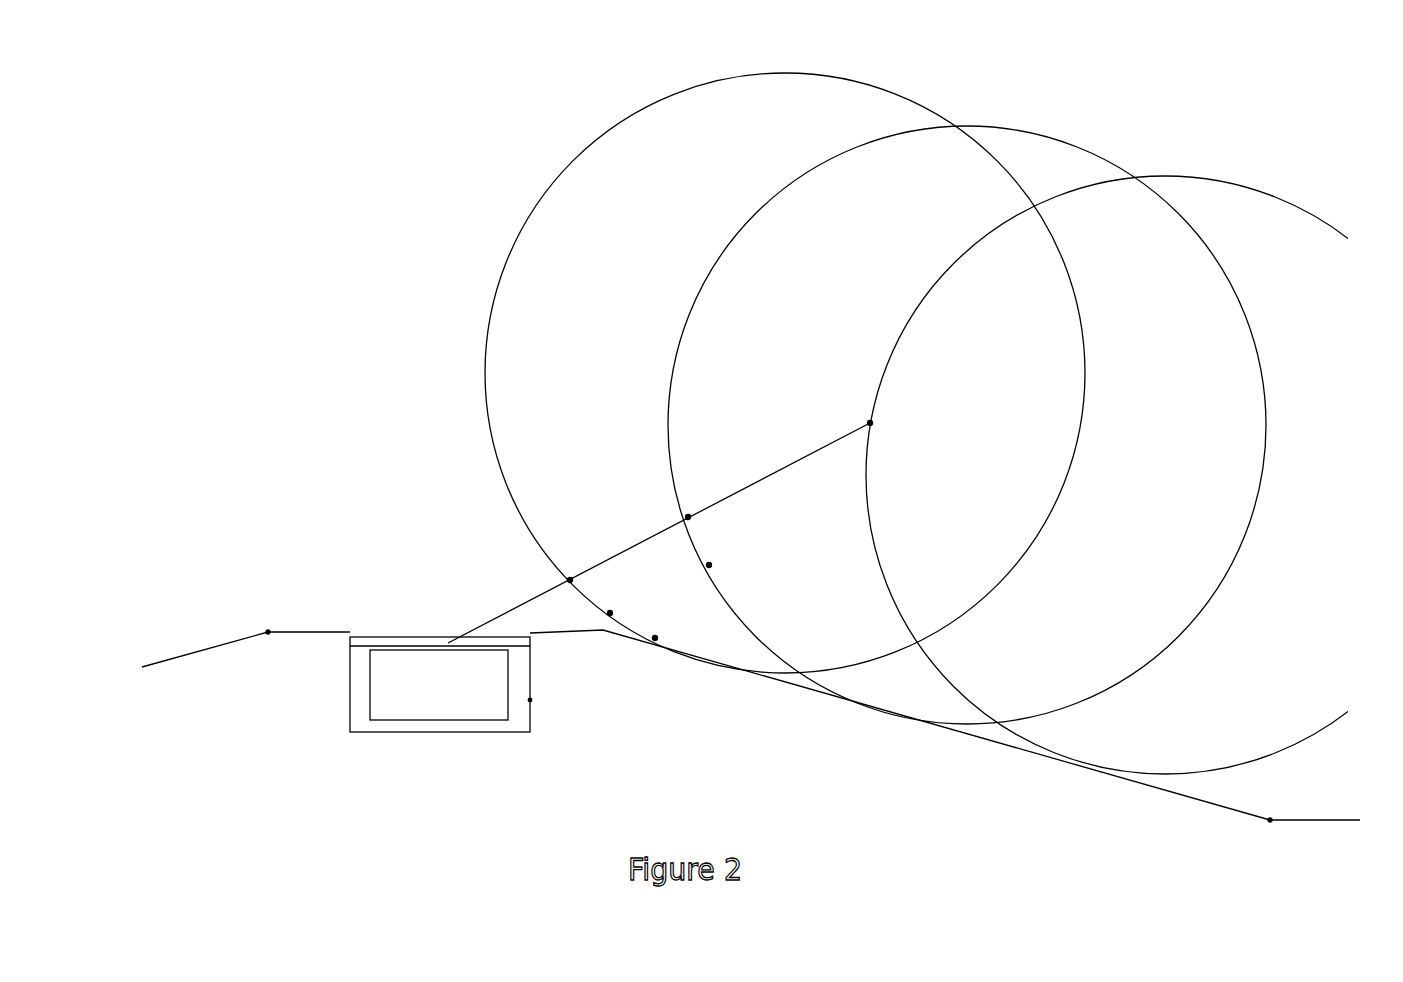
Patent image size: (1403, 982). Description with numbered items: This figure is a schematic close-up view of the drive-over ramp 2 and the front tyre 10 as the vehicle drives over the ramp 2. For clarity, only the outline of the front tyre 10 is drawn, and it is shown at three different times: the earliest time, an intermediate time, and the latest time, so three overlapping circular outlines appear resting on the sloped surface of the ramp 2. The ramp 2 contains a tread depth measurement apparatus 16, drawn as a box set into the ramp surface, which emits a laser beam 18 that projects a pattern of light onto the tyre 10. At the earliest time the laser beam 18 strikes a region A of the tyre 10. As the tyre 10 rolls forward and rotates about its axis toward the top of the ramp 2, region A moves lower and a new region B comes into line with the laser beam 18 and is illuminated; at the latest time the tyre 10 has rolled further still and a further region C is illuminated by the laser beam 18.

The drive-over ramp 2 is at (313, 852).
The front tyre 10 is at (948, 268).
The tread depth measurement apparatus 16 is at (459, 698).
The laser beam 18 is at (508, 610).